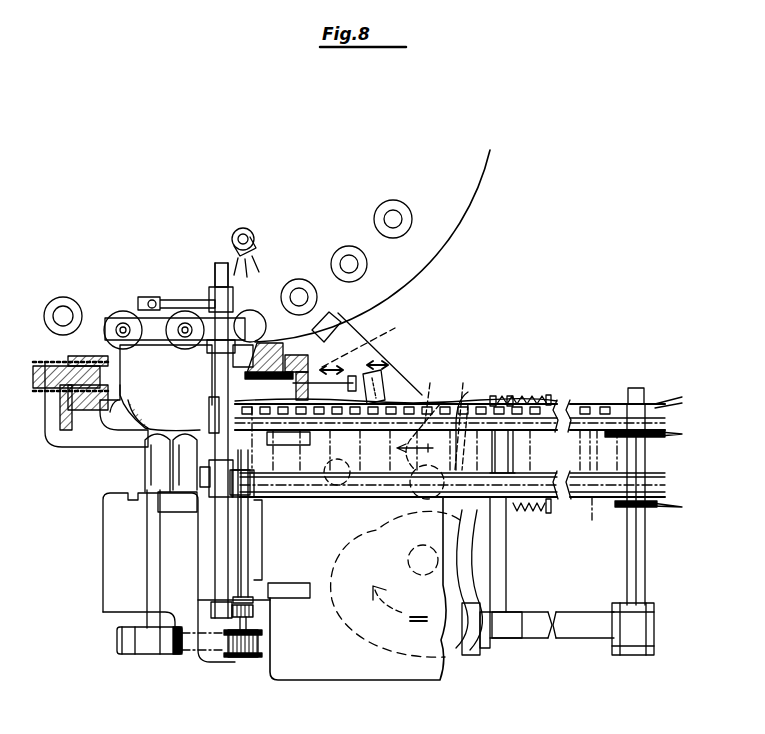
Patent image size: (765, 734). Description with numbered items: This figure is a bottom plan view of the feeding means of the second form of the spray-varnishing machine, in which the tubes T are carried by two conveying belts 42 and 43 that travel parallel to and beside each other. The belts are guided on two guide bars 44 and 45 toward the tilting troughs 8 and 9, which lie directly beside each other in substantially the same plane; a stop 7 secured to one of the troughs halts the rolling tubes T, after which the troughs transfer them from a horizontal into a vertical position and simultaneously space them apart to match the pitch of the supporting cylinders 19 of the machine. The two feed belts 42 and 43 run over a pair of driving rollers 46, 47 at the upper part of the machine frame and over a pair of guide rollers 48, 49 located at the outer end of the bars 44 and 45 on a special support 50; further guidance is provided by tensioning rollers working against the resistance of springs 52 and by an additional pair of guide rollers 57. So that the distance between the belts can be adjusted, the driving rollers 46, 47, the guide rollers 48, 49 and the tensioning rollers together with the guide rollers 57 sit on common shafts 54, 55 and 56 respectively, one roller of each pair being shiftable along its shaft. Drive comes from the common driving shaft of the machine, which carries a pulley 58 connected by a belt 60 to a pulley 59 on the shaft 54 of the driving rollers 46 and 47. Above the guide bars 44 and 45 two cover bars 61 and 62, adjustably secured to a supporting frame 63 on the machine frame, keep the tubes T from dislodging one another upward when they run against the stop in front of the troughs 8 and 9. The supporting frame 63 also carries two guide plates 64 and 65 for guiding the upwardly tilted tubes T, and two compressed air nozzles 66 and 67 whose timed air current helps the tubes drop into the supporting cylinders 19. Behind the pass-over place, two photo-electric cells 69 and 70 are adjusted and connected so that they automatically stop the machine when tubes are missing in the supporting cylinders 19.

The stop 7 is at (150, 522).
The tilting trough 8 is at (147, 494).
The tilting trough 9 is at (158, 462).
The supporting cylinder 19 is at (407, 204).
The conveying belt 42 is at (466, 403).
The conveying belt 43 is at (593, 497).
The guide bar 44 is at (476, 406).
The guide bar 45 is at (565, 505).
The driving roller 46 is at (384, 341).
The driving roller 47 is at (255, 488).
The guide roller 48 is at (660, 436).
The guide roller 49 is at (652, 507).
The special support 50 is at (594, 636).
The spring 52 is at (532, 400).
The shaft 54 is at (252, 573).
The shaft 55 is at (637, 580).
The shaft 56 is at (510, 603).
The guide roller 57 is at (527, 423).
The pulley 58 is at (143, 655).
The pulley 59 is at (238, 658).
The belt 60 is at (190, 652).
The cover bar 61 is at (427, 406).
The cover bar 62 is at (369, 400).
The supporting frame 63 is at (215, 300).
The guide plate 64 is at (170, 372).
The guide plate 65 is at (195, 390).
The compressed air nozzle 66 is at (123, 325).
The compressed air nozzle 67 is at (184, 325).
The photo-electric cell 69 is at (345, 312).
The photo-electric cell 70 is at (262, 305).
The tube T is at (421, 380).